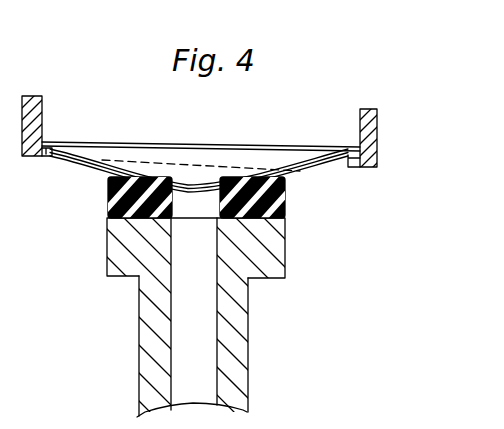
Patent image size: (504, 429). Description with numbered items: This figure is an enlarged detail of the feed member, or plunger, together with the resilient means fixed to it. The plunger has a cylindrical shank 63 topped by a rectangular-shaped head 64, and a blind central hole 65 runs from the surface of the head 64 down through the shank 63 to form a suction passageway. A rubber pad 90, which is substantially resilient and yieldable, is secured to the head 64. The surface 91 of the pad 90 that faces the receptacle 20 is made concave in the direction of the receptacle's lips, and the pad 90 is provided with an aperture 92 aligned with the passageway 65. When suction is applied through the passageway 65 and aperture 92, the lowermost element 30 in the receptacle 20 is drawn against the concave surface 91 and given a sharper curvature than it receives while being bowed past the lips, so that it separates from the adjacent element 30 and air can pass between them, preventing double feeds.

The receptacle 20 is at (378, 124).
The element 30 is at (201, 143).
The cylindrical shank 63 is at (158, 362).
The rectangular-shaped head 64 is at (282, 256).
The blind central hole 65 is at (217, 321).
The rubber pad 90 is at (286, 196).
The concave surface 91 is at (135, 183).
The aperture 92 is at (216, 194).